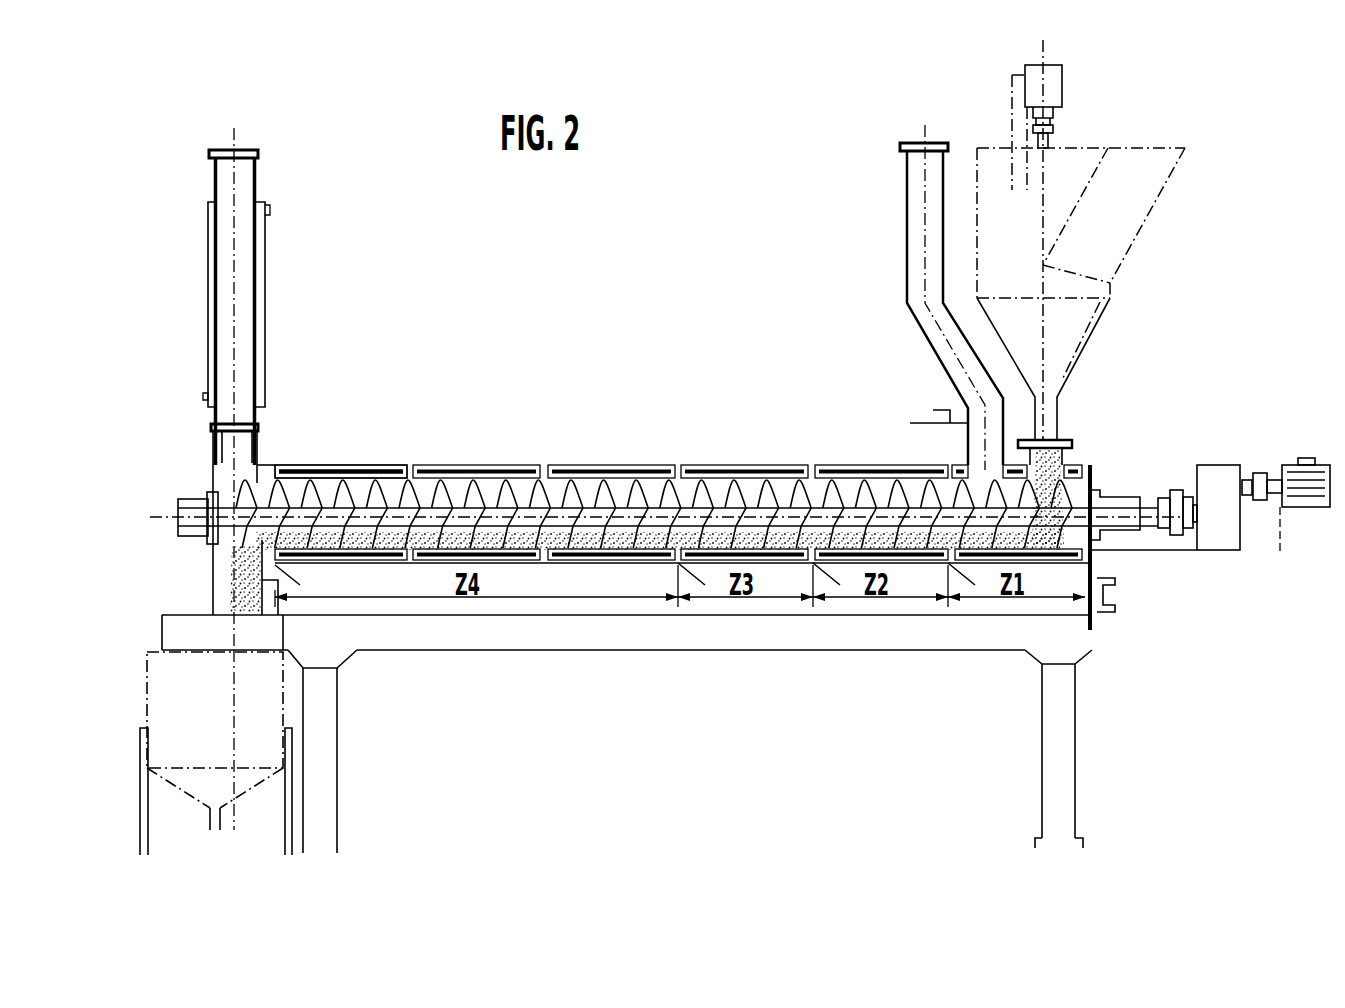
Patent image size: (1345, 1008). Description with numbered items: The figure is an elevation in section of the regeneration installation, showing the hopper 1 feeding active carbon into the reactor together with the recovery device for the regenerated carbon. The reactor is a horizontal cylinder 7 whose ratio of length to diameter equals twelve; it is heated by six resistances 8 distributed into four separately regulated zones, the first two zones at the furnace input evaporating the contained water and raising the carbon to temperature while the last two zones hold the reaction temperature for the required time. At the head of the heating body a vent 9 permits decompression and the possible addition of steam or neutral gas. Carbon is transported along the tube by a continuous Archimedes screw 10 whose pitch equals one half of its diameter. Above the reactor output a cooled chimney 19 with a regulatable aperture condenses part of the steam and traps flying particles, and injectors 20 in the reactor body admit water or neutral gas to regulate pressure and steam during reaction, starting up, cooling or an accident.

The feed hopper 1 is at (1123, 227).
The horizontal cylinder 7 is at (493, 476).
The resistances 8 is at (335, 466).
The vent 9 is at (915, 214).
The Archimedes screw 10 is at (650, 477).
The cooled chimney 19 is at (243, 182).
The injectors 20 is at (920, 423).